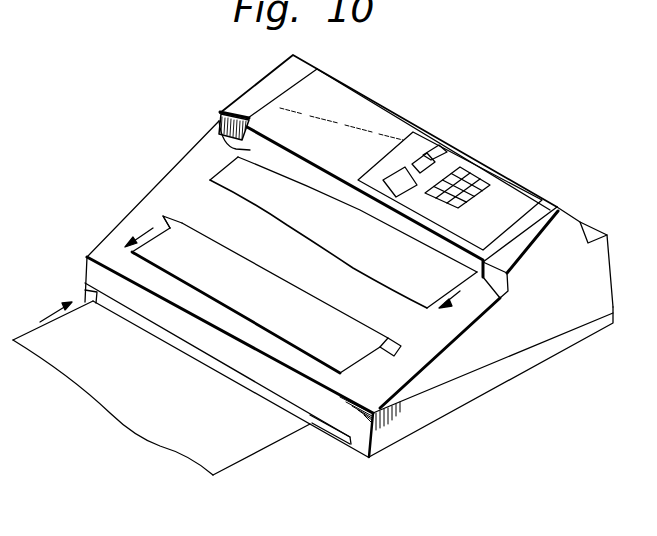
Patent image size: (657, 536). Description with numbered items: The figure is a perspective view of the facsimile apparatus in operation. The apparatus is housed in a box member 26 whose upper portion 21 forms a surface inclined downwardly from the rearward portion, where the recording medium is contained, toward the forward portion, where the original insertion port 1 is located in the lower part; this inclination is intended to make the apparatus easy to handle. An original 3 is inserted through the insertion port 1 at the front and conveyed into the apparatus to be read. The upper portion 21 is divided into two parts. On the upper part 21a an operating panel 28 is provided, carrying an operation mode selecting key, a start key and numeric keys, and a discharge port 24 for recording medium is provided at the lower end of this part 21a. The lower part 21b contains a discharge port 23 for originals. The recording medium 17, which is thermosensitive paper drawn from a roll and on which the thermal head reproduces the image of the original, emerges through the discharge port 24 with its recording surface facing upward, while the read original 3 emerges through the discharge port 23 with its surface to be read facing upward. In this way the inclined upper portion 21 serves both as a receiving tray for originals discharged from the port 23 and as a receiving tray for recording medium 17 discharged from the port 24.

The original insertion port 1 is at (335, 432).
The original 3 is at (233, 450).
The recording medium 17 is at (400, 277).
The upper portion 21 is at (149, 214).
The part of the upper portion 21a is at (388, 115).
The part of the upper portion 21b is at (107, 250).
The discharge port for originals 23 is at (165, 214).
The discharge port for recording medium 24 is at (218, 143).
The box member 26 is at (563, 328).
The operating panel 28 is at (498, 187).